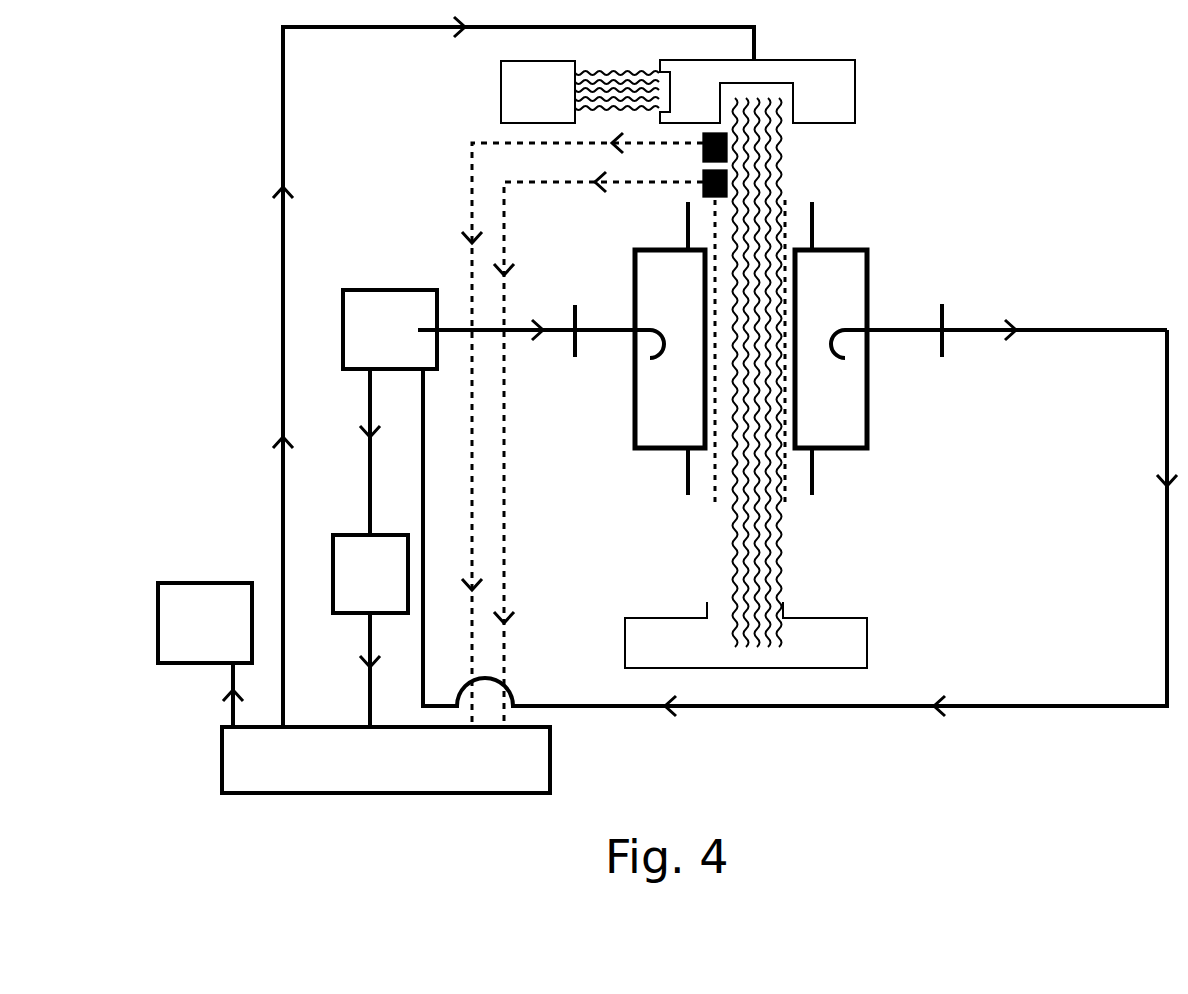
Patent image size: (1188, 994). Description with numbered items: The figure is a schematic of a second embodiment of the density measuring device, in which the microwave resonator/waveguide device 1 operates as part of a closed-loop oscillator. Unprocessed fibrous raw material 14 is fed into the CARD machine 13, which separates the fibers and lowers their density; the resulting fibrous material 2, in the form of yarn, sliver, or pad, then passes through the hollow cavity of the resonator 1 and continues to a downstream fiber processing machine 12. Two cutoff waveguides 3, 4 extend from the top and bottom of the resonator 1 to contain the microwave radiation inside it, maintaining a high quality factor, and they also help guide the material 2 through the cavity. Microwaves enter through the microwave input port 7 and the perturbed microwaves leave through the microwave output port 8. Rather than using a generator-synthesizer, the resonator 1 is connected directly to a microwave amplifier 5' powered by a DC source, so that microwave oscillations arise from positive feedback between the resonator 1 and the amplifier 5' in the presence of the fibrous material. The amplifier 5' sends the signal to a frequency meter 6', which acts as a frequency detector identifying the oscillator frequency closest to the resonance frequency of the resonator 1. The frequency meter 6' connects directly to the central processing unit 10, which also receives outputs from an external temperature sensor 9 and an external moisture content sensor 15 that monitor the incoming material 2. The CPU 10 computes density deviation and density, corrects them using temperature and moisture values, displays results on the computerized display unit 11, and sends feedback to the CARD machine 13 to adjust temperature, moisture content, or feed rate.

The microwave resonator/waveguide device 1 is at (660, 402).
The fibrous material 2 is at (757, 143).
The cutoff waveguide 3 is at (812, 228).
The cutoff waveguide 4 is at (812, 485).
The microwave amplifier 5' is at (390, 329).
The frequency meter 6' is at (370, 574).
The microwave input port 7 is at (612, 328).
The microwave output port 8 is at (899, 330).
The temperature sensor 9 is at (472, 163).
The central processing unit 10 is at (386, 760).
The computerized display unit 11 is at (205, 623).
The downstream fiber processing machine 12 is at (746, 635).
The CARD machine 13 is at (757, 91).
The fibrous raw material 14 is at (580, 92).
The moisture content sensor 15 is at (504, 212).